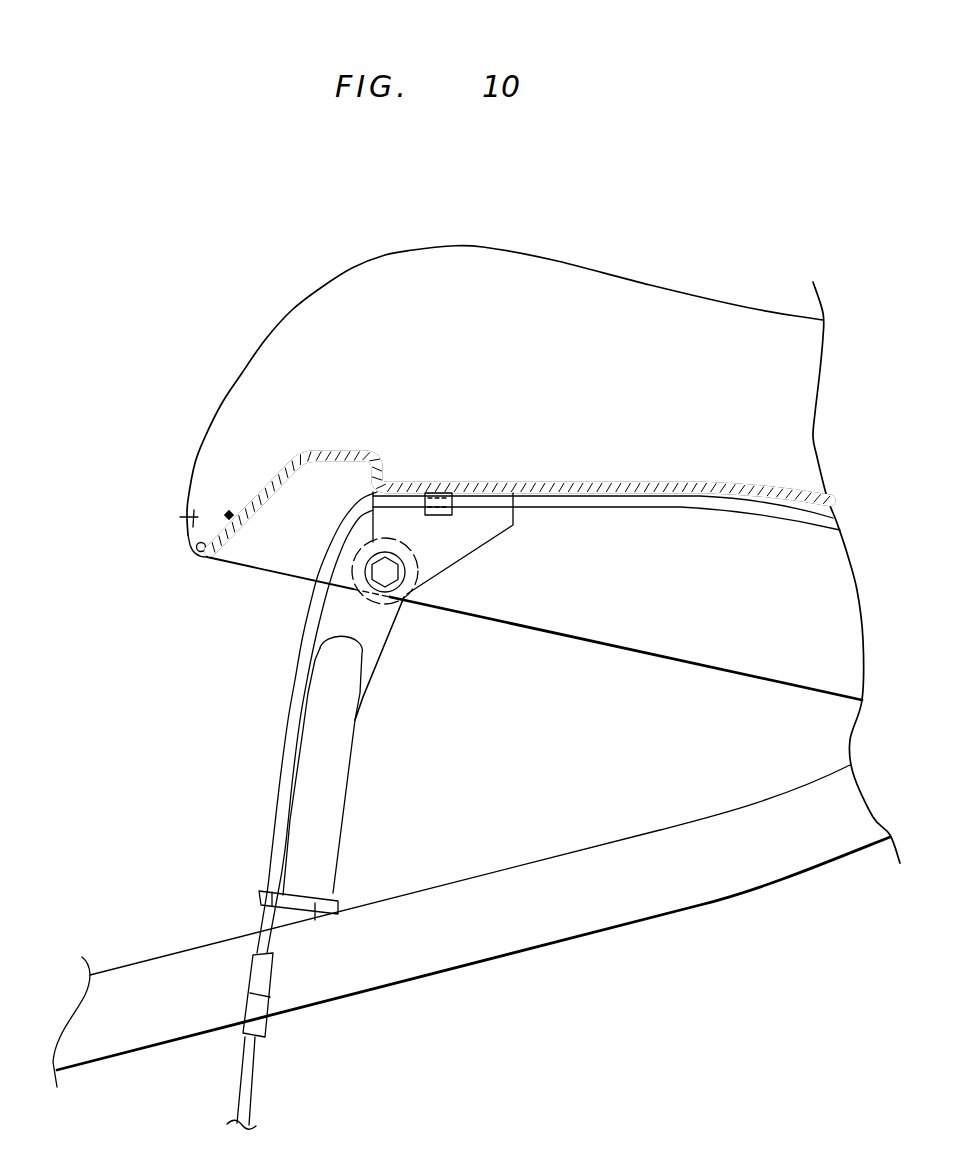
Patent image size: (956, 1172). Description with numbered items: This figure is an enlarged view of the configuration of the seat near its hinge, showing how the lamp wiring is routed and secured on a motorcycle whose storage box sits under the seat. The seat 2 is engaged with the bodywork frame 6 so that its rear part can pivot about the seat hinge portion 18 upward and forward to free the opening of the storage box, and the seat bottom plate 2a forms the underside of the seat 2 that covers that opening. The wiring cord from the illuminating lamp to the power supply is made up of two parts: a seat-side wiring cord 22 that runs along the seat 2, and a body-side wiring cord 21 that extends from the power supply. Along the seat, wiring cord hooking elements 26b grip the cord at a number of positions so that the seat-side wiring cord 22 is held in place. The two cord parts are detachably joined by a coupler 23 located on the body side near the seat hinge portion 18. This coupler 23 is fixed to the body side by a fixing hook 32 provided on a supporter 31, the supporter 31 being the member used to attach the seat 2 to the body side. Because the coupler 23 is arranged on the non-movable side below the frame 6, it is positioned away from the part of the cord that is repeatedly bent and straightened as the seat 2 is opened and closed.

The seat 2 is at (485, 247).
The seat bottom plate 2a is at (645, 488).
The wiring cord hooking element 26b is at (440, 498).
The seat hinge portion 18 is at (452, 540).
The seat-side wiring cord 22 is at (294, 696).
The supporter 31 is at (322, 821).
The fixing hook 32 is at (317, 906).
The bodywork frame 6 is at (713, 881).
The coupler 23 is at (260, 1005).
The body-side wiring cord 21 is at (250, 1090).